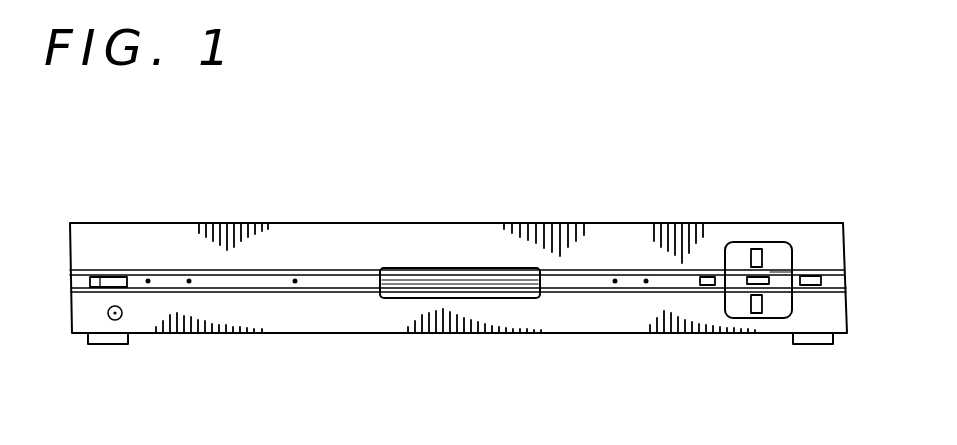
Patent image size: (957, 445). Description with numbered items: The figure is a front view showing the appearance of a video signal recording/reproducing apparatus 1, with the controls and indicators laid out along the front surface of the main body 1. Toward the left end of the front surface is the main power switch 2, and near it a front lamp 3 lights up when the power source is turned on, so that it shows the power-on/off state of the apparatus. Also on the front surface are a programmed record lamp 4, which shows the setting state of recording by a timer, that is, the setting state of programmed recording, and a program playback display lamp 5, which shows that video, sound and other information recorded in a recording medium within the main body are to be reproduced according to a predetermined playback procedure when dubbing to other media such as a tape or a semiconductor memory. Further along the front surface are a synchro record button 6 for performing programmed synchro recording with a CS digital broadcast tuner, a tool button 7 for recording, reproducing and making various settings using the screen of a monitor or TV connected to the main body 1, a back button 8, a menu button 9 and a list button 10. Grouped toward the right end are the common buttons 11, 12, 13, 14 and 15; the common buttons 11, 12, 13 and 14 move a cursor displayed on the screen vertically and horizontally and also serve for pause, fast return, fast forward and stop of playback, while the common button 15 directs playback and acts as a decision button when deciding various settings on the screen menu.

The video signal recording/reproducing apparatus 1 is at (327, 334).
The main power switch 2 is at (109, 277).
The front lamp 3 is at (425, 268).
The programmed record lamp 4 is at (148, 281).
The program playback display lamp 5 is at (189, 281).
The synchro record button 6 is at (295, 281).
The tool button 7 is at (615, 281).
The back button 8 is at (646, 281).
The menu button 9 is at (707, 277).
The list button 10 is at (807, 286).
The common button 11 is at (775, 262).
The common button 12 is at (741, 264).
The common button 13 is at (788, 268).
The common button 14 is at (777, 305).
The common button 15 is at (738, 297).